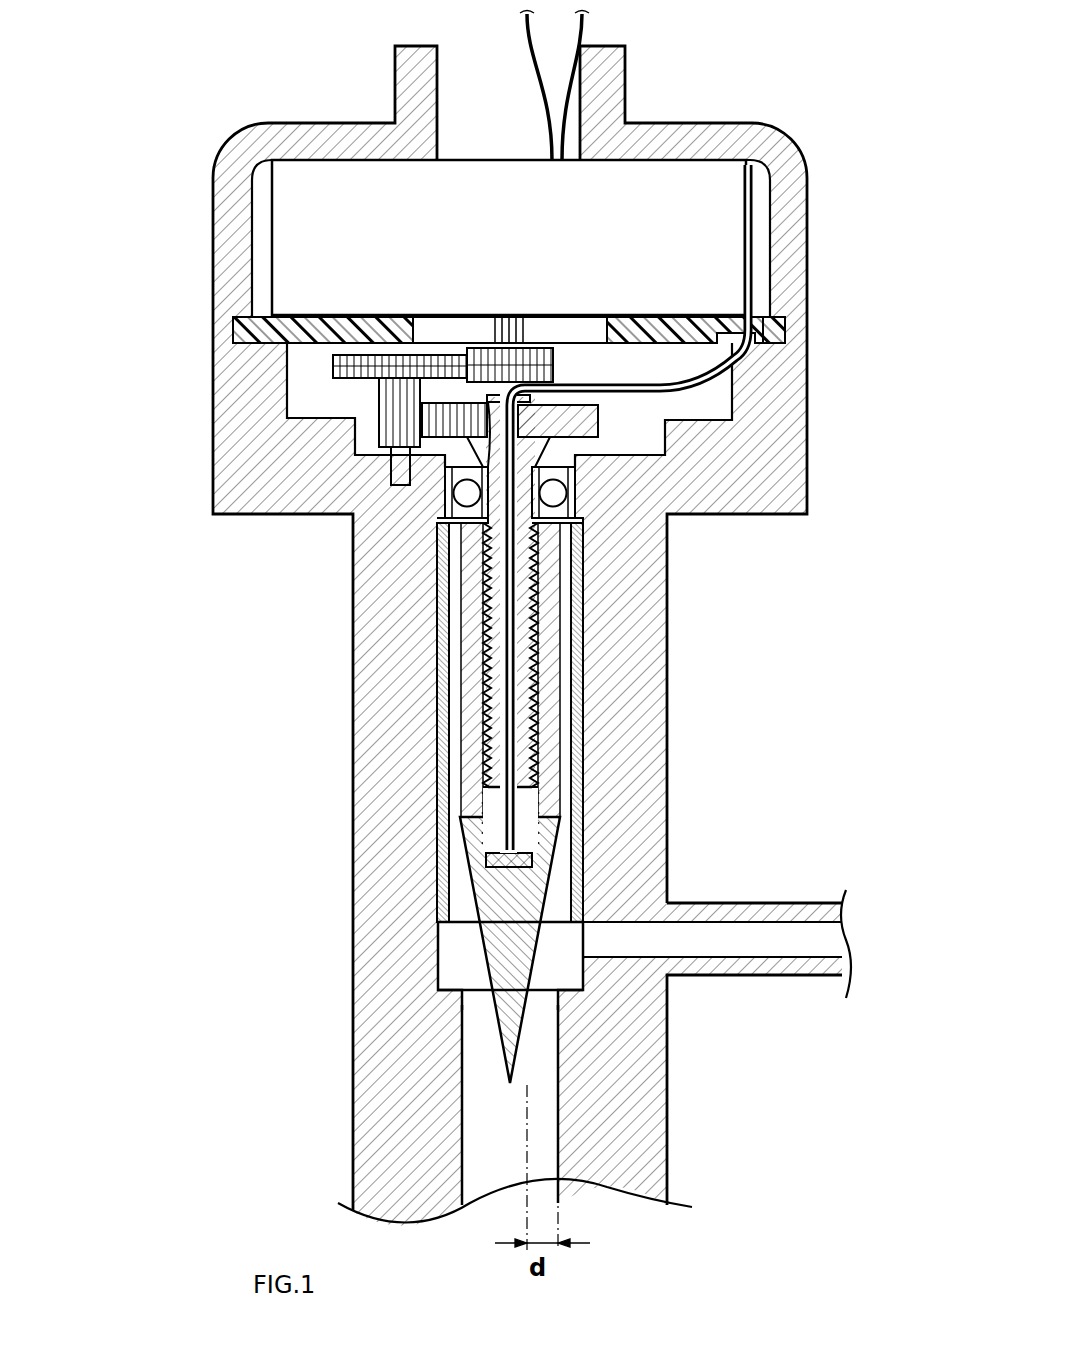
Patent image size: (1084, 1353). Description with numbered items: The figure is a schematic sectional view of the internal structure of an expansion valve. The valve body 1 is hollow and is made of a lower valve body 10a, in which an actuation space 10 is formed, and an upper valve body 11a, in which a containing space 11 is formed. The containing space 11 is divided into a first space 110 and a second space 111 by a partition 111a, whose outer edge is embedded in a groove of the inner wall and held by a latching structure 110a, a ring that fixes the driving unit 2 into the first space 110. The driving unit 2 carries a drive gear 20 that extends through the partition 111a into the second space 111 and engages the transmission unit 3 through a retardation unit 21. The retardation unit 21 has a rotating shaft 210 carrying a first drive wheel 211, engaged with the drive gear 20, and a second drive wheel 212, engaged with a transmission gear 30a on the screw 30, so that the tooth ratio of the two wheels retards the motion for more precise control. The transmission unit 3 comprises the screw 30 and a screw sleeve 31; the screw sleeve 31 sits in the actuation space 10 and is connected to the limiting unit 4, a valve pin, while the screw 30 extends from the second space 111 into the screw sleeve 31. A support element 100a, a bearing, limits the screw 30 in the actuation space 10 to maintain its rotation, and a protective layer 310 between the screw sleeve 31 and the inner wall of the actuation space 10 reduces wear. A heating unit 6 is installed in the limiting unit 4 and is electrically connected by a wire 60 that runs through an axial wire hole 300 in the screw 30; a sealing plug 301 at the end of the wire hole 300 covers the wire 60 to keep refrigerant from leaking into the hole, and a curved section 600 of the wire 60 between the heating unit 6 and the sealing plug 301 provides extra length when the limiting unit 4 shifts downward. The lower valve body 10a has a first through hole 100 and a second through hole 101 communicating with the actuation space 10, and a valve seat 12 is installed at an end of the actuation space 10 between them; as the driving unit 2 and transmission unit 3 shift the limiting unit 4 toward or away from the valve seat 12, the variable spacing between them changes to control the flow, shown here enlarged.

The valve body 1 is at (669, 641).
The driving unit 2 is at (747, 200).
The transmission unit 3 is at (541, 621).
The limiting unit 4 is at (515, 960).
The heating unit 6 is at (518, 860).
The actuation space 10 is at (457, 952).
The lower valve body 10a is at (642, 752).
The containing space 11 is at (120, 217).
The upper valve body 11a is at (790, 448).
The valve seat 12 is at (452, 997).
The drive gear 20 is at (703, 372).
The retardation unit 21 is at (373, 498).
The screw 30 is at (485, 680).
The transmission gear 30a is at (580, 420).
The screw sleeve 31 is at (470, 745).
The wire 60 is at (513, 803).
The first through hole 100 is at (485, 1130).
The support element 100a is at (573, 493).
The second through hole 101 is at (793, 942).
The first space 110 is at (263, 237).
The latching structure 110a is at (785, 332).
The second space 111 is at (303, 366).
The partition 111a is at (660, 328).
The rotating shaft 210 is at (400, 478).
The first drive wheel 211 is at (347, 368).
The second drive wheel 212 is at (388, 428).
The wire hole 300 is at (513, 805).
The sealing plug 301 is at (535, 398).
The protective layer 310 is at (578, 658).
The curved section 600 is at (538, 615).